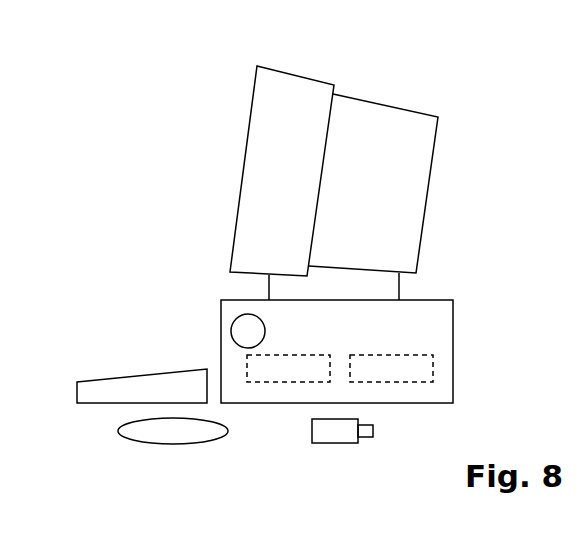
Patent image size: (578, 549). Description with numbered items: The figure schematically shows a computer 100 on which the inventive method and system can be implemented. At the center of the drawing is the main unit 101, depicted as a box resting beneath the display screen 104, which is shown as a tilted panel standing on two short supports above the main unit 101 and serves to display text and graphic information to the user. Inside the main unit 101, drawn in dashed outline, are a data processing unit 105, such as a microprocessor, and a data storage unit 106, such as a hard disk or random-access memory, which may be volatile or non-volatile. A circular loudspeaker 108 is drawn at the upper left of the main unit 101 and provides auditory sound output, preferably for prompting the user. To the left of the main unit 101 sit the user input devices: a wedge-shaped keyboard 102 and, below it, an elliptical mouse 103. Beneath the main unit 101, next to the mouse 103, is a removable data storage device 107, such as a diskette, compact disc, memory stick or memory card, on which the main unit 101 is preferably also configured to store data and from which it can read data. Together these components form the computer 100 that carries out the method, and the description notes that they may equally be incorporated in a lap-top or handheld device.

The computer 100 is at (64, 75).
The main unit 101 is at (453, 341).
The keyboard 102 is at (125, 380).
The mouse 103 is at (120, 437).
The display screen 104 is at (253, 98).
The data processing unit 105 is at (280, 360).
The data storage unit 106 is at (373, 360).
The removable data storage device 107 is at (312, 435).
The loudspeaker 108 is at (232, 325).